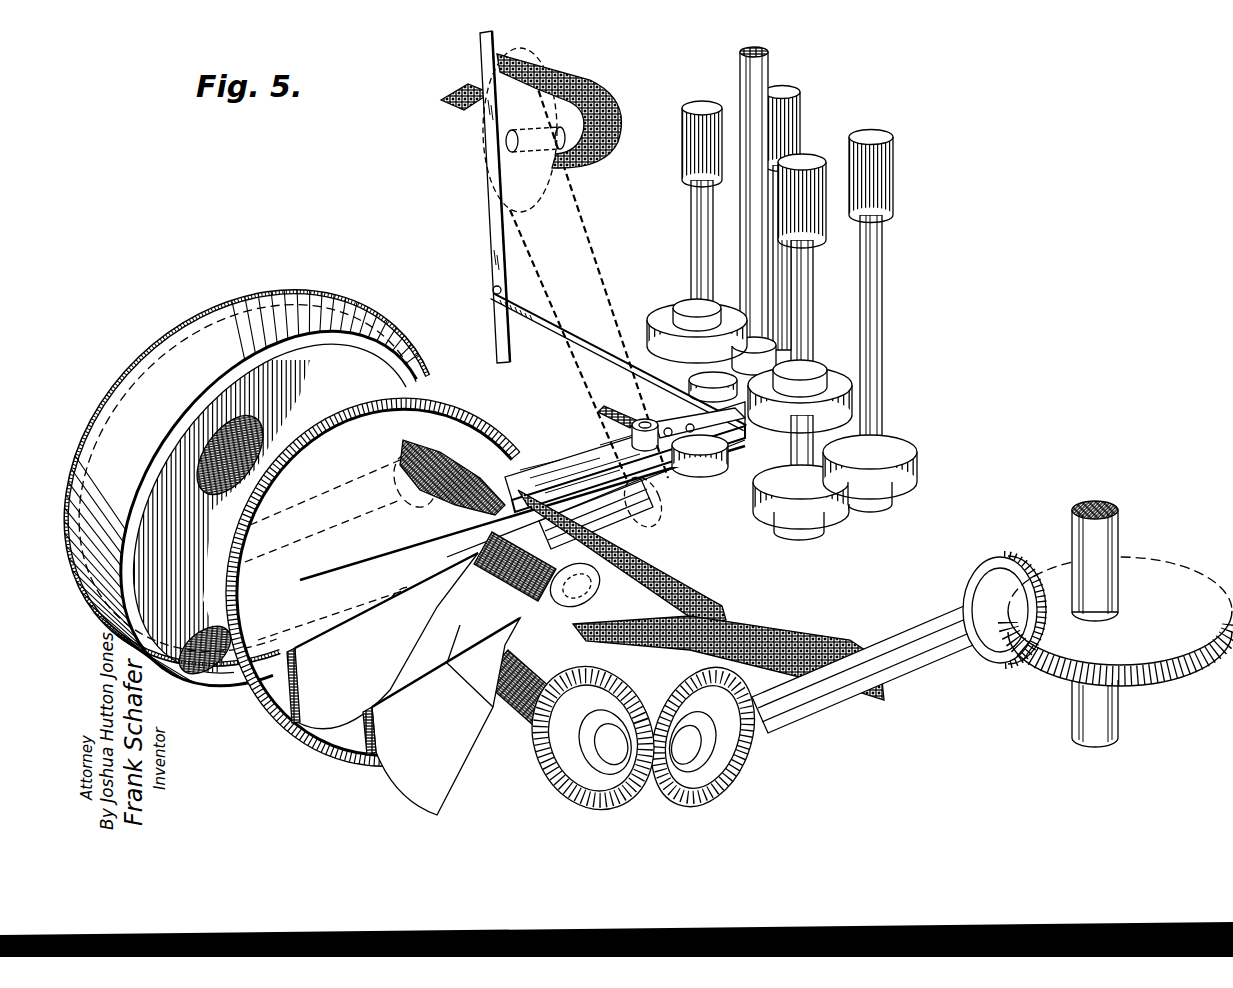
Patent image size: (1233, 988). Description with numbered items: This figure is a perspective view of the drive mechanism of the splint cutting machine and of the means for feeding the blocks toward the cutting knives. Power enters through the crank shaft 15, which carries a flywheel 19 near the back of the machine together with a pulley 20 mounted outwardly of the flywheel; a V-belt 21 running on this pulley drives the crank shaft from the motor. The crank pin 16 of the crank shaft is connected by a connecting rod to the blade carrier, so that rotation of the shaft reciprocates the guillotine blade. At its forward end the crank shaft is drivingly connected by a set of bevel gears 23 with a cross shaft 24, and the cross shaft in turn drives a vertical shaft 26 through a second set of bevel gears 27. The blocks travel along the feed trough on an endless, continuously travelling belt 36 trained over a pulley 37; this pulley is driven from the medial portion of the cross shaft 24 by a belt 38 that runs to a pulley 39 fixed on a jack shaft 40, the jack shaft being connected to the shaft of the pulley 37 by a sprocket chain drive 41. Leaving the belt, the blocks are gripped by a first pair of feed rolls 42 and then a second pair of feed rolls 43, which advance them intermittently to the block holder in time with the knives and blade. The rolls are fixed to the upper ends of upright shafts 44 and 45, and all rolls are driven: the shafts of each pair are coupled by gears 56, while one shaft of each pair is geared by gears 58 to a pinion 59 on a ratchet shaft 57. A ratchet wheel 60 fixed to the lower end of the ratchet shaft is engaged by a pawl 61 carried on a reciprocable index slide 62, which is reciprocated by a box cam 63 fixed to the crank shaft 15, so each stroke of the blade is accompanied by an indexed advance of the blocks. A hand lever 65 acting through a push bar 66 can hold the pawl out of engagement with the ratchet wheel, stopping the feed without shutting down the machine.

The crank shaft 15 is at (513, 727).
The crank pin 16 is at (488, 565).
The flywheel 19 is at (222, 332).
The pulley 20 is at (136, 366).
The V-belt 21 is at (172, 334).
The set of bevel gears 23 is at (645, 772).
The cross shaft 24 is at (920, 650).
The vertical shaft 26 is at (1102, 510).
The set of bevel gears 27 is at (1032, 548).
The endless belt 36 is at (578, 85).
The pulley 37 is at (568, 122).
The belt 38 is at (735, 612).
The pulley 39 is at (590, 600).
The jack shaft 40 is at (628, 520).
The sprocket chain drive 41 is at (592, 255).
The first pair of feed rolls 42 is at (704, 108).
The second pair of feed rolls 43 is at (805, 160).
The upright shafts 44 is at (700, 214).
The upright shafts 45 is at (805, 322).
The gears 56 is at (738, 442).
The ratchet shaft 57 is at (750, 240).
The gears 58 is at (655, 318).
The pinion 59 is at (692, 383).
The ratchet wheel 60 is at (700, 450).
The pawl 61 is at (735, 452).
The index slide 62 is at (552, 472).
The box cam 63 is at (446, 400).
The hand lever 65 is at (492, 184).
The push bar 66 is at (572, 332).